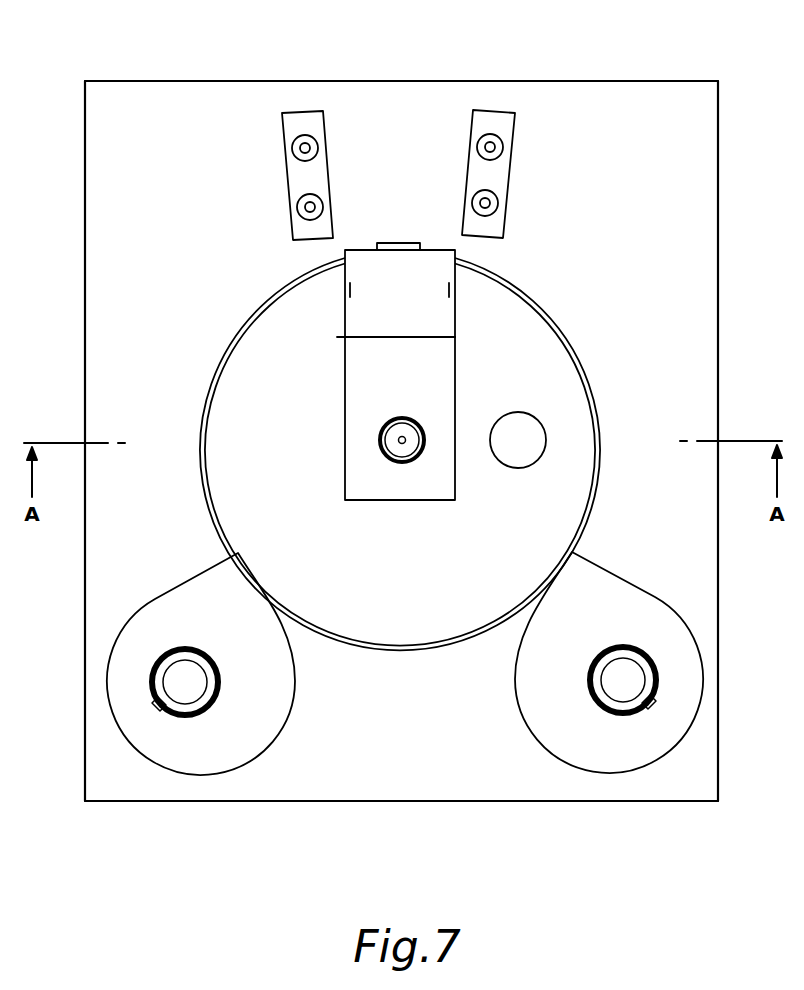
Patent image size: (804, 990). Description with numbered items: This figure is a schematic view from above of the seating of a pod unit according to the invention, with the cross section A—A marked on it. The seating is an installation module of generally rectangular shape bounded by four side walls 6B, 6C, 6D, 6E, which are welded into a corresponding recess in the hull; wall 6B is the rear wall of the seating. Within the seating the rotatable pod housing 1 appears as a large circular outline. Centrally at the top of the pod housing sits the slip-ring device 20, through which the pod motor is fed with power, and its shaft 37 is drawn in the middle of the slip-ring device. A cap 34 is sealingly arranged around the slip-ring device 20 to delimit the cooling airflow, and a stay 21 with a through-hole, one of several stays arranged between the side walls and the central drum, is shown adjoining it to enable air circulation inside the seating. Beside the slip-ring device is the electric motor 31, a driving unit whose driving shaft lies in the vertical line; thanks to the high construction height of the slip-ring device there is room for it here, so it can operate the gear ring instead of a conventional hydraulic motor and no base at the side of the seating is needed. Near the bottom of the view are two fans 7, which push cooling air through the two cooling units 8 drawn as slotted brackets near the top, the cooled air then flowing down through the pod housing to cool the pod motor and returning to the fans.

The pod housing 1 is at (598, 395).
The rear wall of the seating 6B is at (570, 80).
The side wall of the seating 6C is at (718, 271).
The side wall of the seating 6D is at (404, 802).
The side wall of the seating 6E is at (85, 273).
The fan 7 is at (195, 780).
The cooling unit 8 is at (492, 176).
The slip-ring device 20 is at (402, 462).
The stay 21 is at (375, 268).
The electric motor 31 is at (521, 428).
The cap 34 is at (345, 383).
The shaft 37 is at (403, 438).